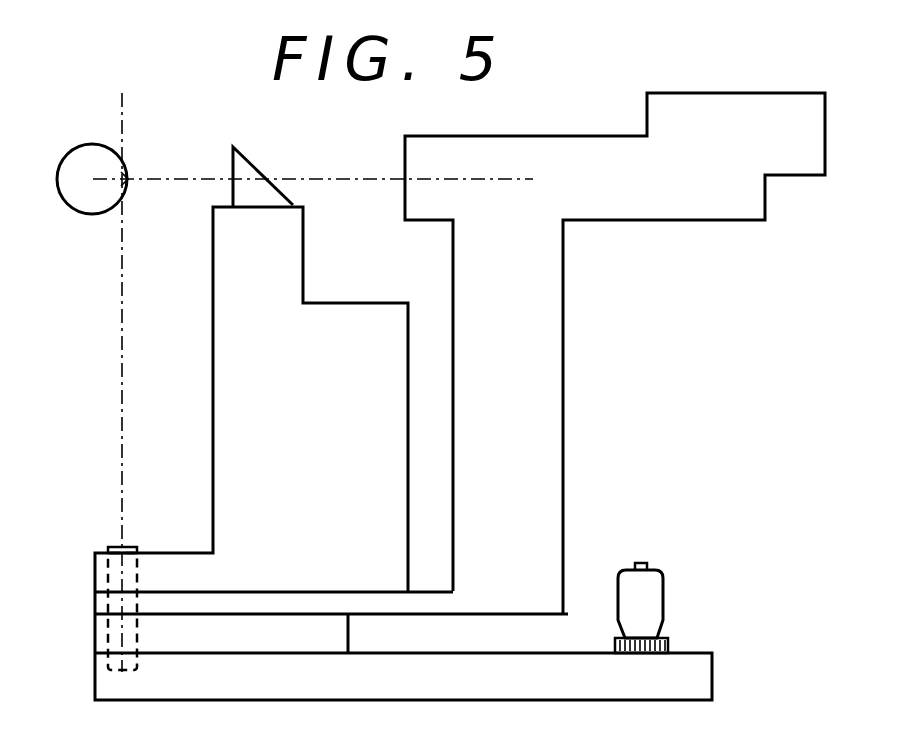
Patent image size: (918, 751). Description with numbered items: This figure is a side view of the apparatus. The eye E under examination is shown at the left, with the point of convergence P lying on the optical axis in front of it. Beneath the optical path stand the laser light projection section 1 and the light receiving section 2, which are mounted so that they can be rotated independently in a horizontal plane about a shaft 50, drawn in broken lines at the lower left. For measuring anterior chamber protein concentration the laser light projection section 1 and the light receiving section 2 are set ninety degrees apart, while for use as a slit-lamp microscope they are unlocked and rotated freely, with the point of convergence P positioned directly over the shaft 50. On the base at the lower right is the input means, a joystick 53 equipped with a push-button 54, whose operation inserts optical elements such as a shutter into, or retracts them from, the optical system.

The eye E is at (63, 157).
The point of convergence P is at (122, 173).
The laser light projection section 1 is at (213, 377).
The light receiving section 2 is at (567, 363).
The shaft 50 is at (110, 542).
The joystick 53 is at (665, 616).
The push-button 54 is at (650, 564).